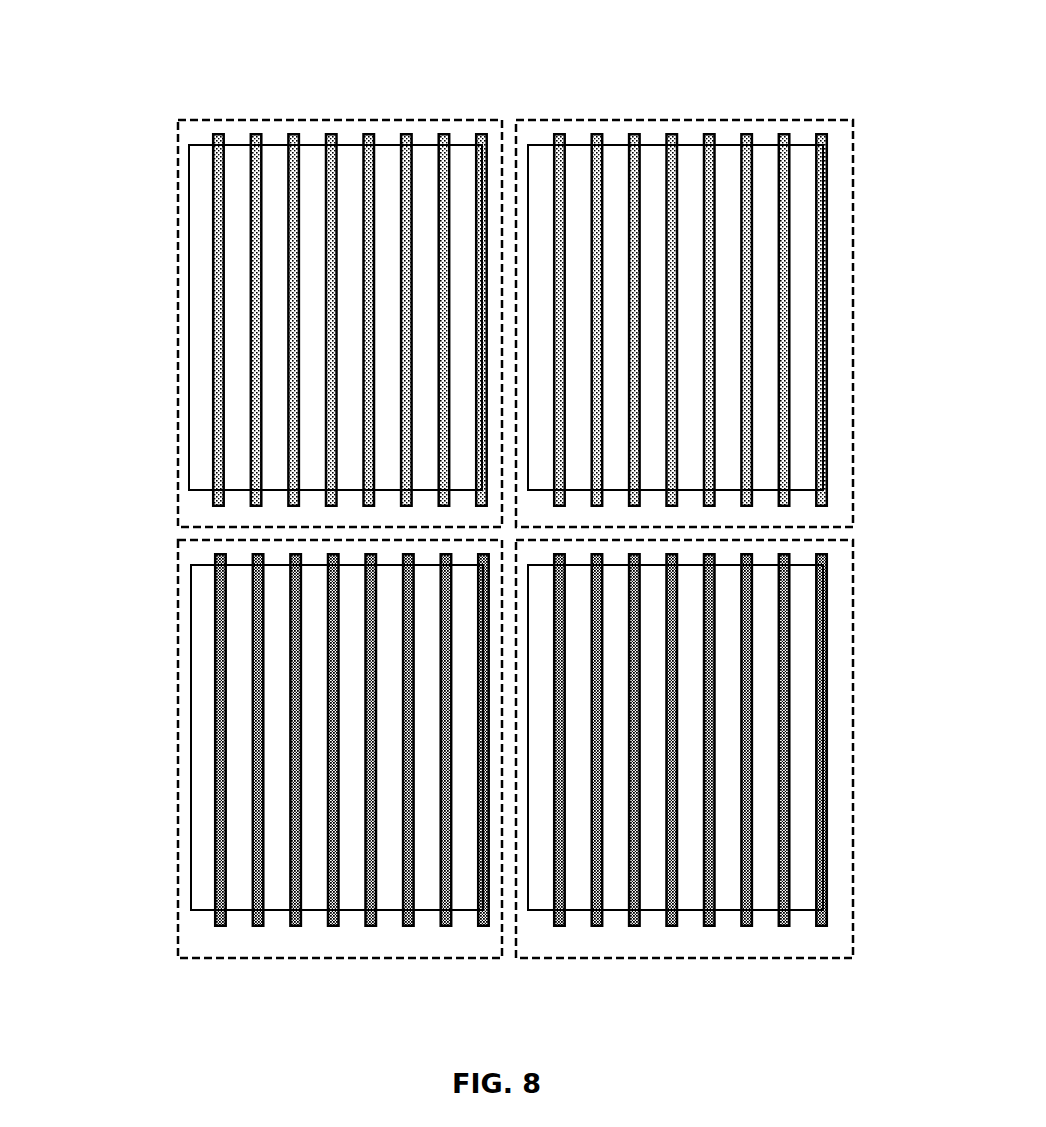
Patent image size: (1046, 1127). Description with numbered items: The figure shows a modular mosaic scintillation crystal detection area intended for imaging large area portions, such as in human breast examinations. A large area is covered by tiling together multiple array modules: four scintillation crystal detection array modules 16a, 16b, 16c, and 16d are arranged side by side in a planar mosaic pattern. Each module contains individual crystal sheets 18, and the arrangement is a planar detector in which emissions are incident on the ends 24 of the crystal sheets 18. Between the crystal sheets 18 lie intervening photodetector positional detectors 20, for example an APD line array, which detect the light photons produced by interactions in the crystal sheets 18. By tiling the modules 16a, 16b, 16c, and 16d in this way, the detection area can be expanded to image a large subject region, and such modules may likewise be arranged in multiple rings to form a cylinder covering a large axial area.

The scintillation crystal detection array module 16a is at (853, 321).
The scintillation crystal detection array module 16b is at (853, 746).
The scintillation crystal detection array module 16c is at (178, 752).
The scintillation crystal detection array module 16d is at (272, 267).
The crystal sheet 18 is at (188, 145).
The photodetector positional detector 20 is at (218, 130).
The end 24 is at (348, 143).